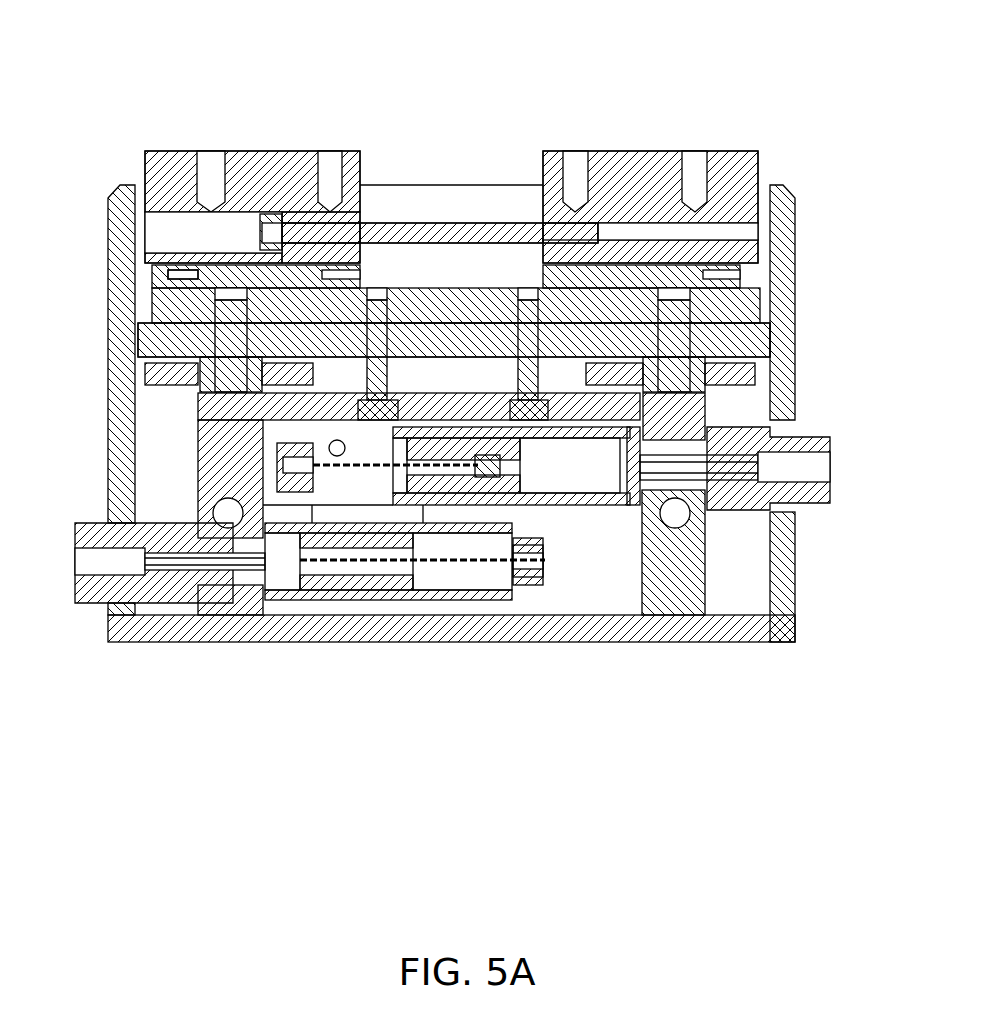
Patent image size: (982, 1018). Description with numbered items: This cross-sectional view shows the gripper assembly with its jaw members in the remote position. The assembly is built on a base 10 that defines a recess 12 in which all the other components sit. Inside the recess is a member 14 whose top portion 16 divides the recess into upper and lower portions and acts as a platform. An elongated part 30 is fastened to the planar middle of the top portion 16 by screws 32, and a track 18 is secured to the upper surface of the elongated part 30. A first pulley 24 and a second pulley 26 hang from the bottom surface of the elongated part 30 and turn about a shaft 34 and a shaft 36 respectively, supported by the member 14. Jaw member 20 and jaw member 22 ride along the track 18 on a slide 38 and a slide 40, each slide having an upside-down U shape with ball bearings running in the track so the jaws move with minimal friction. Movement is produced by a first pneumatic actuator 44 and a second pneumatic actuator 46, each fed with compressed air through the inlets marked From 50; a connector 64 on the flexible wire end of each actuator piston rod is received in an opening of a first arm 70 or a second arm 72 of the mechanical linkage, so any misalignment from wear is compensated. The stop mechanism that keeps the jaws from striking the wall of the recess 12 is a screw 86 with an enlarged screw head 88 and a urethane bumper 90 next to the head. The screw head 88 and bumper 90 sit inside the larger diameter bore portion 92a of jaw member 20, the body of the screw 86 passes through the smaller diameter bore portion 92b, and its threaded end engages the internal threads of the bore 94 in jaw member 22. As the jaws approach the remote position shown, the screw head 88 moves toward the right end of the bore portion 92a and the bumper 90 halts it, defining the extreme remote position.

The base 10 is at (785, 577).
The recess 12 is at (745, 605).
The member 14 is at (665, 605).
The top portion 16 is at (455, 350).
The track 18 is at (160, 285).
The jaw member 20 is at (266, 212).
The jaw member 22 is at (755, 150).
The first pulley 24 is at (198, 400).
The second pulley 26 is at (755, 372).
The elongated part 30 is at (765, 335).
The screws 32 is at (387, 385).
The shaft 34 is at (200, 390).
The shaft 36 is at (690, 345).
The slide 38 is at (210, 273).
The slide 40 is at (760, 232).
The first pneumatic actuator 44 is at (348, 605).
The second pneumatic actuator 46 is at (566, 508).
The pressure source 50 is at (838, 471).
The connector 64 is at (277, 452).
The first arm 70 is at (285, 470).
The second arm 72 is at (531, 566).
The screw 86 is at (397, 228).
The screw head 88 is at (292, 232).
The bumper 90 is at (325, 247).
The larger diameter bore portion 92a is at (233, 227).
The smaller diameter bore portion 92b is at (365, 255).
The bore 94 is at (618, 235).